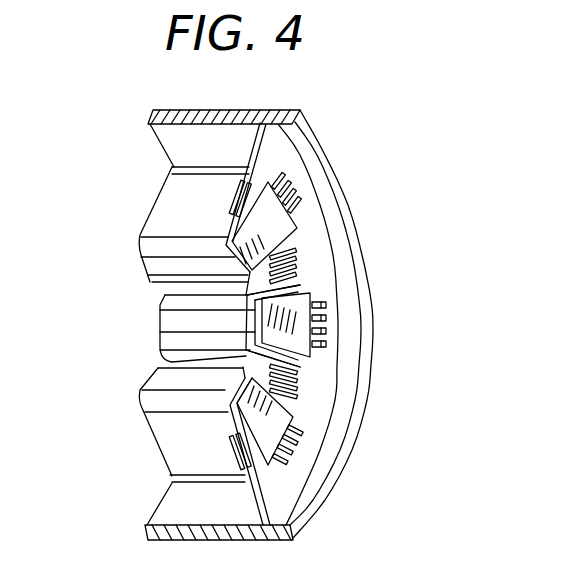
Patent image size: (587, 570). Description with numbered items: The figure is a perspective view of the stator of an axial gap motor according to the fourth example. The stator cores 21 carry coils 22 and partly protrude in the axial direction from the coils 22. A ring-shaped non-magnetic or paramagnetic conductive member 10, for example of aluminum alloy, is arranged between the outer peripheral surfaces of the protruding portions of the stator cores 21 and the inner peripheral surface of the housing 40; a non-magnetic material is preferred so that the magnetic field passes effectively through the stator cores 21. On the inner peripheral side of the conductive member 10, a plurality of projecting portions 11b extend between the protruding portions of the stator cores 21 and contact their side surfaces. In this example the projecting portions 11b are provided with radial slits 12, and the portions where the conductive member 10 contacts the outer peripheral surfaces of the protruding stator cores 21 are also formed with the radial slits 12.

The conductive member 10 is at (313, 417).
The projecting portion 11b is at (302, 287).
The radial slit 12 is at (290, 222).
The stator core 21 is at (268, 242).
The coil 22 is at (195, 247).
The housing 40 is at (352, 328).